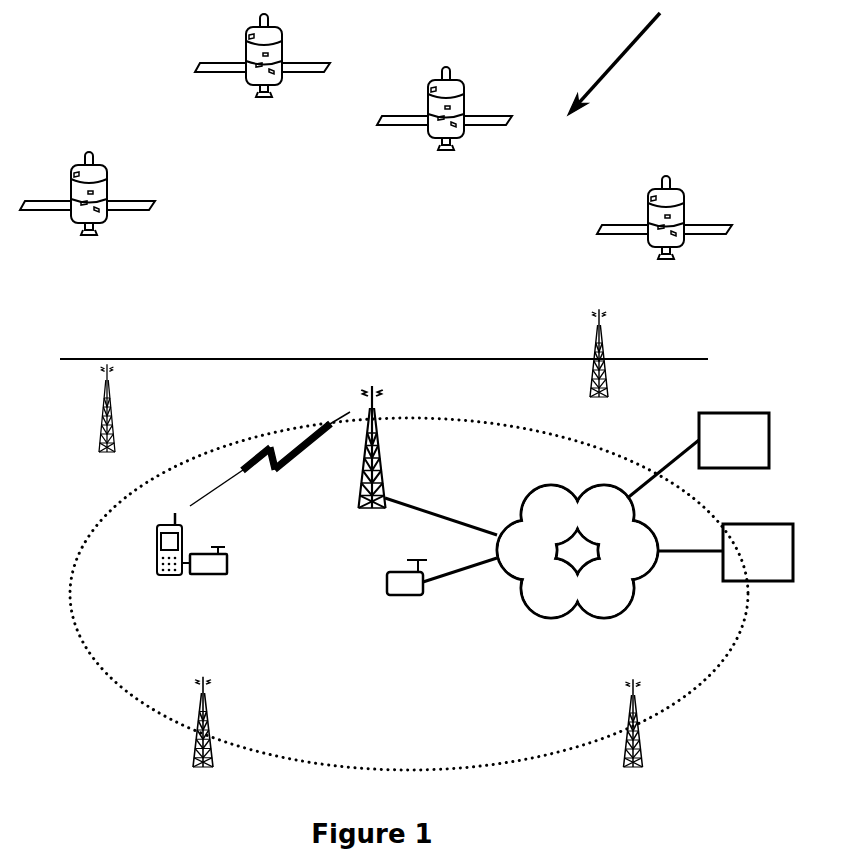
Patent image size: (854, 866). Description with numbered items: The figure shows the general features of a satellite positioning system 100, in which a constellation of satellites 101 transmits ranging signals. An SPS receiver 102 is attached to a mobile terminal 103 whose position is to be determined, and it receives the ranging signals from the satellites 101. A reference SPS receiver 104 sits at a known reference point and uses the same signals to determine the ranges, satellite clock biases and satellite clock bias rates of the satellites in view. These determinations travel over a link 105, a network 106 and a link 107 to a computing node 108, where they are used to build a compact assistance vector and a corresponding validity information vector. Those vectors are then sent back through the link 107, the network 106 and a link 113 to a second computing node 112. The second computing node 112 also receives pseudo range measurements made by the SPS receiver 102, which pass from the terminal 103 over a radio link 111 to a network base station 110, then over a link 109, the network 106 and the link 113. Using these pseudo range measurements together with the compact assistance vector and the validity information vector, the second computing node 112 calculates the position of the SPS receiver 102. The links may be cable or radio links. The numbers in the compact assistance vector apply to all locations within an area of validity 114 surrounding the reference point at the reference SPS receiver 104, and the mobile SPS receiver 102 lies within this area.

The satellite positioning system 100 is at (641, 57).
The satellites 101 is at (462, 83).
The SPS receiver 102 is at (215, 577).
The mobile terminal 103 is at (156, 575).
The reference SPS receiver 104 is at (407, 597).
The link 105 is at (460, 573).
The network 106 is at (577, 551).
The link 107 is at (696, 560).
The computing node 108 is at (758, 552).
The link 109 is at (443, 518).
The network base station 110 is at (380, 452).
The radio link 111 is at (240, 450).
The second computing node 112 is at (734, 440).
The link 113 is at (668, 458).
The area of validity 114 is at (127, 693).